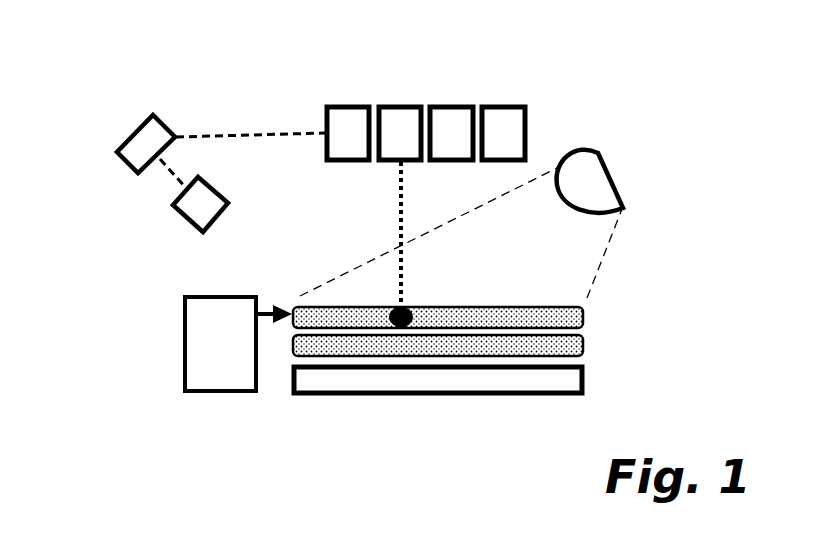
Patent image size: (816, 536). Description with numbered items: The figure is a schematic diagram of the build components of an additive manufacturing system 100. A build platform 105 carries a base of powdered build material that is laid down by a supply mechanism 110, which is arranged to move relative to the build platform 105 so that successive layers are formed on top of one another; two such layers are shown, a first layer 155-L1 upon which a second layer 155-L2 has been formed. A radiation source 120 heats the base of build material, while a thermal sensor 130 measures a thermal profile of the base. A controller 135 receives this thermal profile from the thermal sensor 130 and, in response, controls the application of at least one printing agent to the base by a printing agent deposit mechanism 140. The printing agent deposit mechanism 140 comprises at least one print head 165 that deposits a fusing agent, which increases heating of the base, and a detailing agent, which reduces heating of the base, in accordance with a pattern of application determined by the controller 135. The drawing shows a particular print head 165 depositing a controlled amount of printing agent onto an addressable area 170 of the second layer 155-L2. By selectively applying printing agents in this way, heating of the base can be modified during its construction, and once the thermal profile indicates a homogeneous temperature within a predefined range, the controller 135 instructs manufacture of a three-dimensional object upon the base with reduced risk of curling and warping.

The additive manufacturing system 100 is at (122, 48).
The build platform 105 is at (330, 396).
The supply mechanism 110 is at (238, 344).
The radiation source 120 is at (612, 177).
The thermal sensor 130 is at (187, 218).
The controller 135 is at (125, 160).
The printing agent deposit mechanism 140 is at (475, 98).
The first layer 155-L1 is at (583, 345).
The second layer 155-L2 is at (583, 317).
The print head 165 is at (397, 105).
The addressable area 170 is at (408, 306).